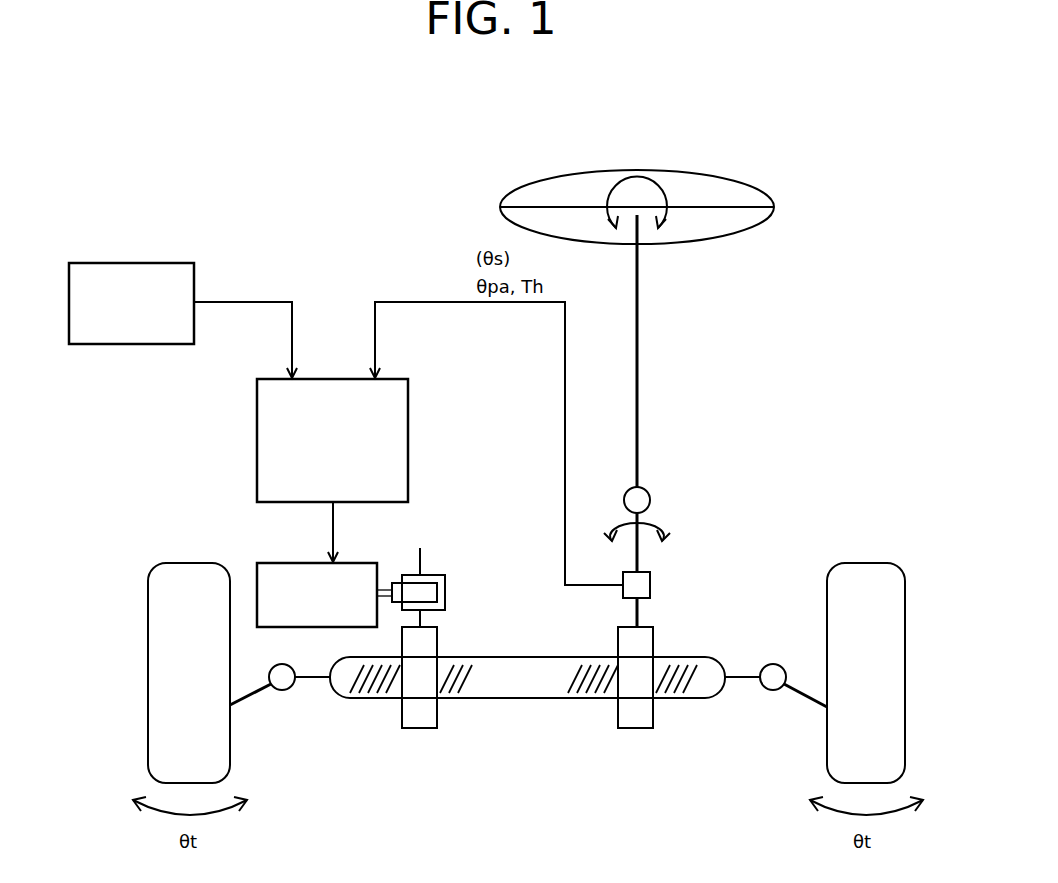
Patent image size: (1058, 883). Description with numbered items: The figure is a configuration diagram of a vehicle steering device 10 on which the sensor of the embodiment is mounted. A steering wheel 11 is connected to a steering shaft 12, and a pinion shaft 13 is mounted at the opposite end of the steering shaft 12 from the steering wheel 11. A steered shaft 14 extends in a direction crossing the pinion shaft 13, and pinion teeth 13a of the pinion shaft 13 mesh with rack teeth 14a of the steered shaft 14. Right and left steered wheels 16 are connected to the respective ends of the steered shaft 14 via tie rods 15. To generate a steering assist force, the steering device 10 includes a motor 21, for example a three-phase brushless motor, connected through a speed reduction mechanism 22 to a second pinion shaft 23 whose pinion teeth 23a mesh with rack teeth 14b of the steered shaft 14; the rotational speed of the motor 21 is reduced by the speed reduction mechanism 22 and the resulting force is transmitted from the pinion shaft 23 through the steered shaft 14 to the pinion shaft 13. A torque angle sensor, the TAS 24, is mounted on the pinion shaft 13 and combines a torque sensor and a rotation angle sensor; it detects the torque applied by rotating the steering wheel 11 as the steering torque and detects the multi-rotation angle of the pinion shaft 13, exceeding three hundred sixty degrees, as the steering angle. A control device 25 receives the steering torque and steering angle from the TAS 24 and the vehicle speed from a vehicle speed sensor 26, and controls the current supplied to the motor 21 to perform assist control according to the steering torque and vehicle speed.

The steering device 10 is at (801, 166).
The steering wheel 11 is at (718, 176).
The steering shaft 12 is at (641, 448).
The pinion shaft 13 is at (640, 612).
The pinion teeth 13a is at (637, 729).
The steered shaft 14 is at (522, 700).
The rack teeth 14a is at (596, 689).
The rack teeth 14b is at (451, 689).
The tie rods 15 is at (315, 679).
The steered wheels 16 is at (231, 750).
The motor 21 is at (363, 562).
The speed reduction mechanism 22 is at (458, 603).
The pinion shaft 23 is at (423, 558).
The pinion teeth 23a is at (420, 729).
The torque angle sensor (TAS) 24 is at (650, 586).
The control device 25 is at (257, 441).
The vehicle speed sensor 26 is at (130, 263).